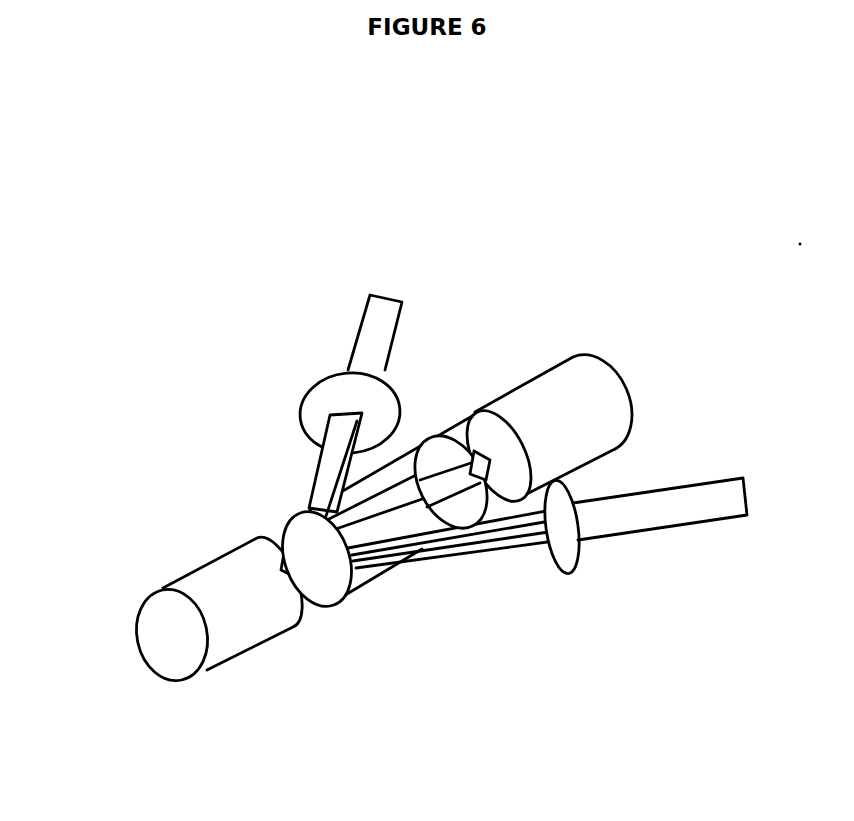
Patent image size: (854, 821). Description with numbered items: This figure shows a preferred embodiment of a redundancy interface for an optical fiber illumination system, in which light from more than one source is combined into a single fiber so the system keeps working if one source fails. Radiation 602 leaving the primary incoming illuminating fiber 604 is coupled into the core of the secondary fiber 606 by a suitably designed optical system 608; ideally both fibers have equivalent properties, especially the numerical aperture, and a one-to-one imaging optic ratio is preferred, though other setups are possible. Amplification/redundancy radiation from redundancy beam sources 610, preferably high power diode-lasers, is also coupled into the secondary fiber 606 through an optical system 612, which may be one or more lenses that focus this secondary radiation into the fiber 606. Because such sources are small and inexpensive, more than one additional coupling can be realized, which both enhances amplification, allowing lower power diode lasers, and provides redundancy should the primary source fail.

The radiation 602 is at (376, 588).
The primary incoming illuminating fiber 604 is at (578, 351).
The secondary fiber 606 is at (200, 554).
The optical system 608 is at (432, 433).
The redundancy beam sources 610 is at (401, 289).
The optical system 612 is at (299, 383).